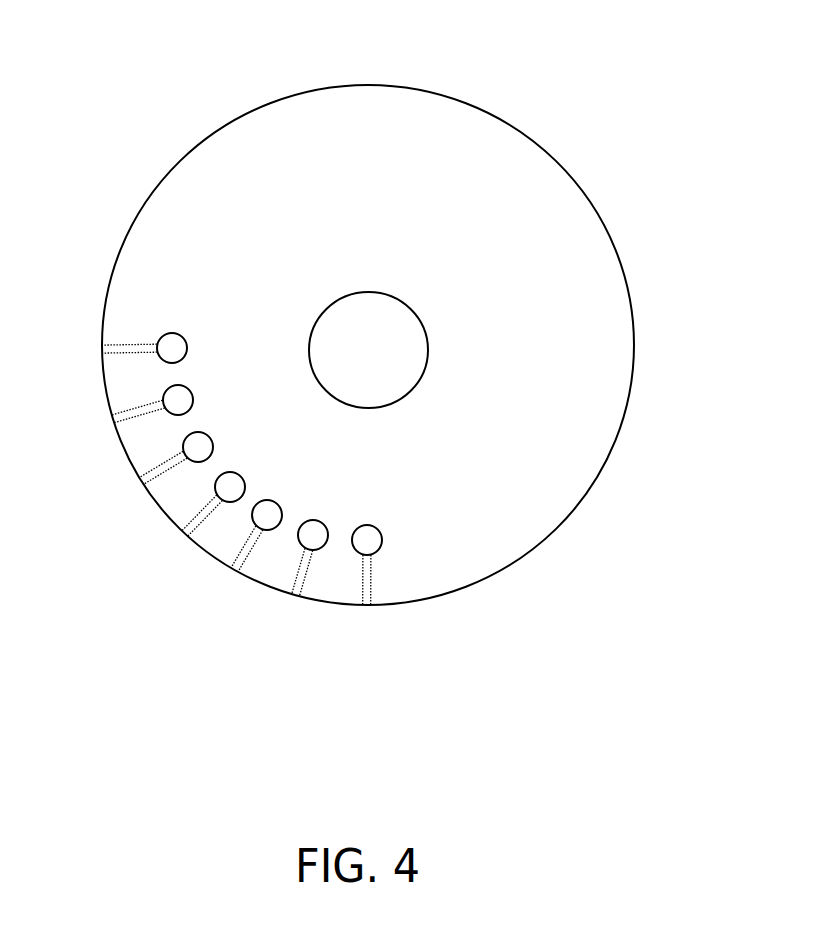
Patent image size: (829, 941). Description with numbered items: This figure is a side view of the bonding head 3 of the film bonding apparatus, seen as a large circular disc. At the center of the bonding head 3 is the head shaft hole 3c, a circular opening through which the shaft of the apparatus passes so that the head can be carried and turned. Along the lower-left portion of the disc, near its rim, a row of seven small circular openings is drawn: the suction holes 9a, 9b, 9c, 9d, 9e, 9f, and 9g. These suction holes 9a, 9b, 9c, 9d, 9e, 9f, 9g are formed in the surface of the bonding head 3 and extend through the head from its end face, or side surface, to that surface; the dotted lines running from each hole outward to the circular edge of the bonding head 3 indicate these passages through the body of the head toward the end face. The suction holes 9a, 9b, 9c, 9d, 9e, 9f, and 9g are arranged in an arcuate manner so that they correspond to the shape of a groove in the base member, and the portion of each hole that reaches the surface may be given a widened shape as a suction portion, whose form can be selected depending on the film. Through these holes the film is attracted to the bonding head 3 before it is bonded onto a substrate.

The bonding head 3 is at (445, 107).
The head shaft hole 3c is at (408, 348).
The suction hole 9a is at (367, 540).
The suction hole 9b is at (313, 535).
The suction hole 9c is at (267, 515).
The suction hole 9d is at (230, 487).
The suction hole 9e is at (198, 447).
The suction hole 9f is at (178, 400).
The suction hole 9g is at (168, 346).